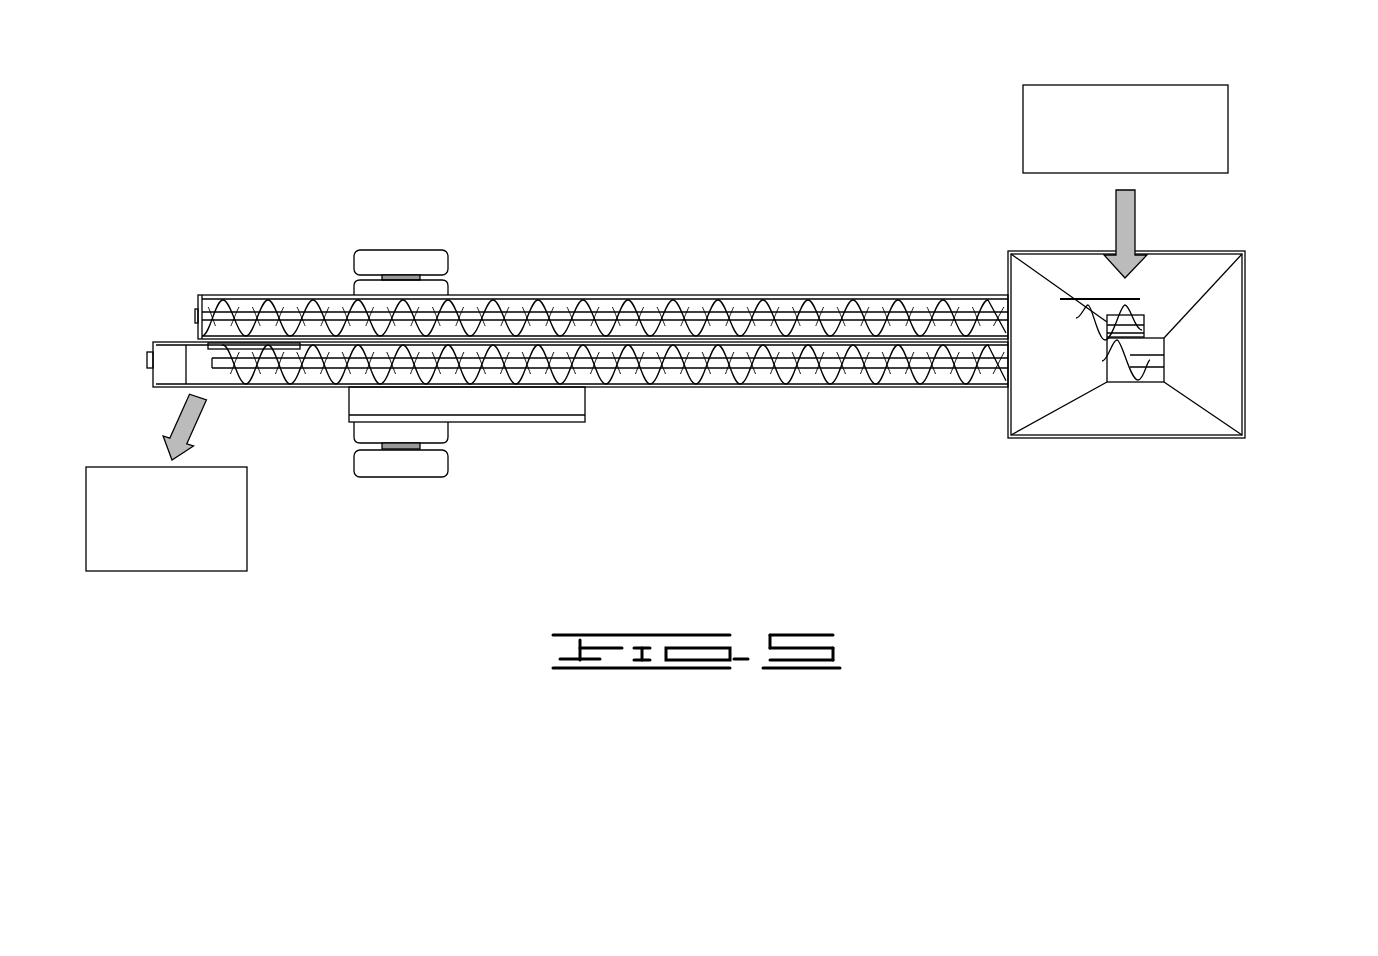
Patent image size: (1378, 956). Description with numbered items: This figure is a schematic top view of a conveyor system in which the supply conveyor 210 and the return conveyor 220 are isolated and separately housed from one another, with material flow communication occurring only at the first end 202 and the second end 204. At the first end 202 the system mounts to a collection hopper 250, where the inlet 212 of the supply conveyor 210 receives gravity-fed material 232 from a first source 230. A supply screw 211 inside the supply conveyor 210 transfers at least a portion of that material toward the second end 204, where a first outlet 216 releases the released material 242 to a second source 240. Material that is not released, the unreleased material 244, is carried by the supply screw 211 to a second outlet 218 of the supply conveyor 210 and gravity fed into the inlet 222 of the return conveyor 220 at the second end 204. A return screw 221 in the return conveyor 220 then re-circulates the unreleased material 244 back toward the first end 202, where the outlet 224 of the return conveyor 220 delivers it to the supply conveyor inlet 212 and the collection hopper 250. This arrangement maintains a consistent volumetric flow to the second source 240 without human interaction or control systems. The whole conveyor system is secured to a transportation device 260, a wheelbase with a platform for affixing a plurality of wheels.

The first end 202 is at (707, 366).
The second end 204 is at (523, 288).
The supply conveyor 210 is at (750, 386).
The supply screw 211 is at (605, 396).
The inlet 212 is at (1122, 374).
The first outlet 216 is at (268, 378).
The second outlet 218 is at (215, 342).
The return conveyor 220 is at (740, 298).
The return screw 221 is at (605, 293).
The inlet 222 is at (250, 310).
The outlet 224 is at (1100, 305).
The first source 230 is at (1105, 142).
The material 232 is at (1138, 230).
The second source 240 is at (143, 533).
The released material 242 is at (177, 428).
The unreleased material 244 is at (228, 332).
The collection hopper 250 is at (1109, 352).
The transportation device 260 is at (470, 458).